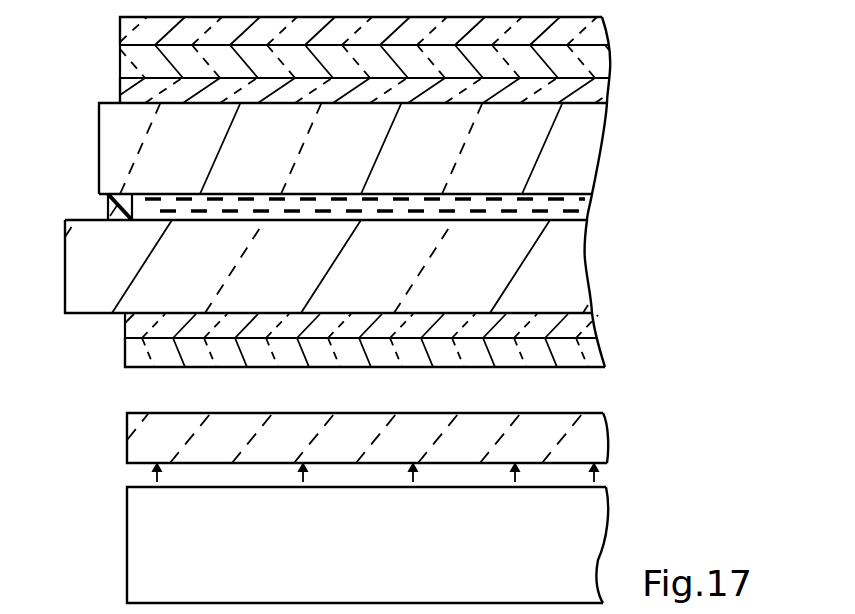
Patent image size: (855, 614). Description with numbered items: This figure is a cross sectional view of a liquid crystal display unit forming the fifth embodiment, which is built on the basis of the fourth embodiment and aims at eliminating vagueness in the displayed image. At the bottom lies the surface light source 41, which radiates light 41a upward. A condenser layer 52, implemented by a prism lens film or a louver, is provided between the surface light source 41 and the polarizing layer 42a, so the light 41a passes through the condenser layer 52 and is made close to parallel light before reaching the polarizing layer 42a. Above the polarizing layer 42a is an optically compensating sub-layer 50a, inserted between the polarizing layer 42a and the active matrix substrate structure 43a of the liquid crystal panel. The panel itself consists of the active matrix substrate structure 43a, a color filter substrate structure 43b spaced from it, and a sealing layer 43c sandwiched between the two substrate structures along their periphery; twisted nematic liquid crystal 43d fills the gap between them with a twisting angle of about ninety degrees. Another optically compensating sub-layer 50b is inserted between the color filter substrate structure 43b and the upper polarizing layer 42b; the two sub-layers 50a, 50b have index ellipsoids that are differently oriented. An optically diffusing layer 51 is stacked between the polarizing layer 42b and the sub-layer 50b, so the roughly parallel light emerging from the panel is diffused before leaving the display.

The surface light source 41 is at (135, 565).
The light 41a is at (614, 478).
The polarizing layer 42a is at (140, 356).
The polarizing layer 42b is at (121, 21).
The active matrix substrate structure 43a is at (93, 283).
The color filter substrate structure 43b is at (120, 140).
The sealing layer 43c is at (108, 206).
The twisted nematic liquid crystal 43d is at (173, 221).
The optically compensating sub-layer 50a is at (140, 325).
The optically compensating sub-layer 50b is at (130, 90).
The optically diffusing layer 51 is at (130, 57).
The condenser layer 52 is at (145, 445).